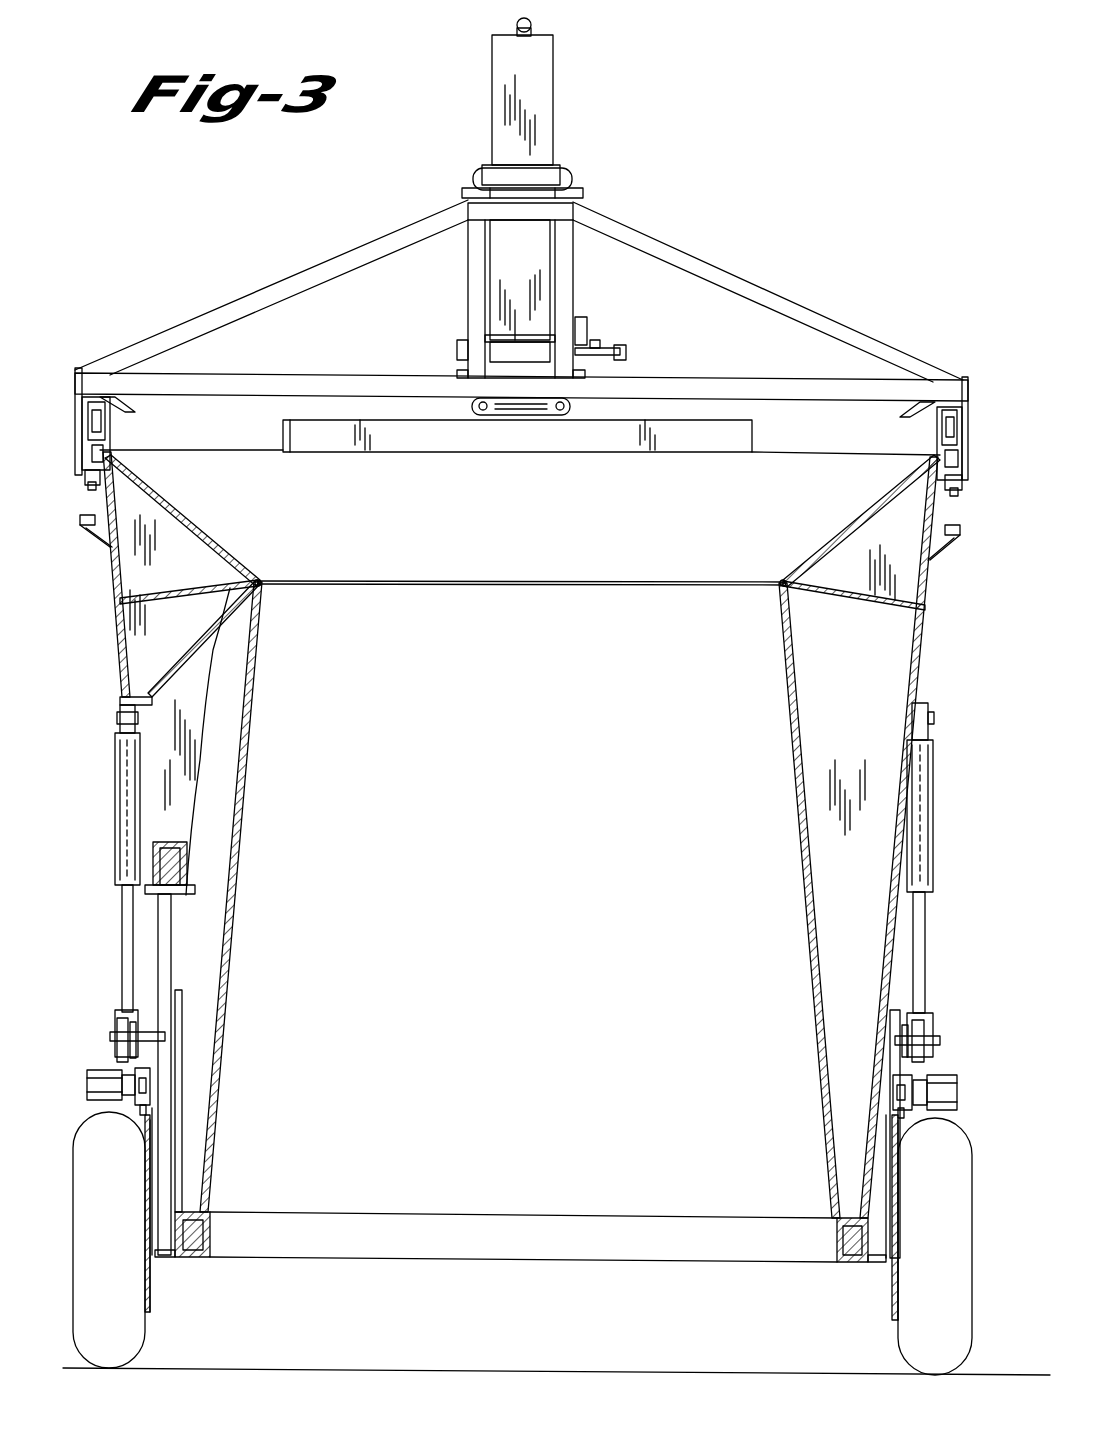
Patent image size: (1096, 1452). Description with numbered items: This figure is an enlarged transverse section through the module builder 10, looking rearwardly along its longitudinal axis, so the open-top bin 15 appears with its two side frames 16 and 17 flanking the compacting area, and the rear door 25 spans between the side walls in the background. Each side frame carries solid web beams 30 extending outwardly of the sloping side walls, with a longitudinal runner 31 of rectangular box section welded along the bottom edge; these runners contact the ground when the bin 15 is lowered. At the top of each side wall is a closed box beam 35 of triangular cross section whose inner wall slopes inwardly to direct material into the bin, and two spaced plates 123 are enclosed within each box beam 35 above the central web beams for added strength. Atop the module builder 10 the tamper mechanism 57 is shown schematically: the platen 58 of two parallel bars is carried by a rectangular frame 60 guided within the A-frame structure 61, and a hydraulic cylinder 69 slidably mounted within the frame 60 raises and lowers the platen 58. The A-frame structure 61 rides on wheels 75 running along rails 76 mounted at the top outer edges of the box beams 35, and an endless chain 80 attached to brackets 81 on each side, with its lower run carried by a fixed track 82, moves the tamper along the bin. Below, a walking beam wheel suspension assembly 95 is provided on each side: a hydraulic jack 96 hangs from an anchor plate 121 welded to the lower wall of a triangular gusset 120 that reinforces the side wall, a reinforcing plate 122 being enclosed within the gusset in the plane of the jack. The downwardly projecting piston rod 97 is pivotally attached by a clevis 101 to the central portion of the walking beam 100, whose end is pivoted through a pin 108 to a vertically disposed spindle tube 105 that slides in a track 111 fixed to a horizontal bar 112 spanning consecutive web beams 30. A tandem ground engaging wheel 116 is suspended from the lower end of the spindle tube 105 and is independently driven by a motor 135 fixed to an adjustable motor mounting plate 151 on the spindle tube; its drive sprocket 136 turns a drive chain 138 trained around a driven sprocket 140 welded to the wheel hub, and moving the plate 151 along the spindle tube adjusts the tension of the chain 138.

The module builder 10 is at (773, 248).
The bin 15 is at (275, 580).
The side frame 16 is at (118, 630).
The side frame 17 is at (930, 625).
The door 25 is at (493, 857).
The web beam 30 is at (233, 665).
The longitudinal runner 31 is at (210, 1250).
The box beam 35 is at (215, 545).
The tamper mechanism 57 is at (580, 95).
The platen 58 is at (520, 455).
The rectangular frame 60 is at (495, 57).
The A-frame structure 61 is at (373, 243).
The hydraulic cylinder 69 is at (515, 25).
The wheels 75 is at (110, 430).
The rails 76 is at (105, 453).
The endless chain 80 is at (105, 480).
The brackets 81 is at (100, 490).
The fixed track 82 is at (85, 528).
The walking beam wheel suspension assembly 95 is at (103, 800).
The hydraulic jack 96 is at (140, 795).
The piston rod 97 is at (125, 900).
The walking beam 100 is at (118, 1040).
The clevis 101 is at (120, 1012).
The spindle tube 105 is at (165, 1100).
The pin 108 is at (115, 1040).
The track 111 is at (178, 1128).
The horizontal bar 112 is at (170, 842).
The ground engaging wheel 116 is at (952, 1288).
The gusset 120 is at (215, 608).
The anchor plate 121 is at (125, 700).
The reinforcing plate 122 is at (170, 535).
The plates 123 is at (140, 645).
The motor 135 is at (95, 1070).
The drive sprocket 136 is at (148, 1085).
The drive chain 138 is at (150, 1290).
The driven sprocket 140 is at (150, 1235).
The motor mounting plate 151 is at (140, 1110).